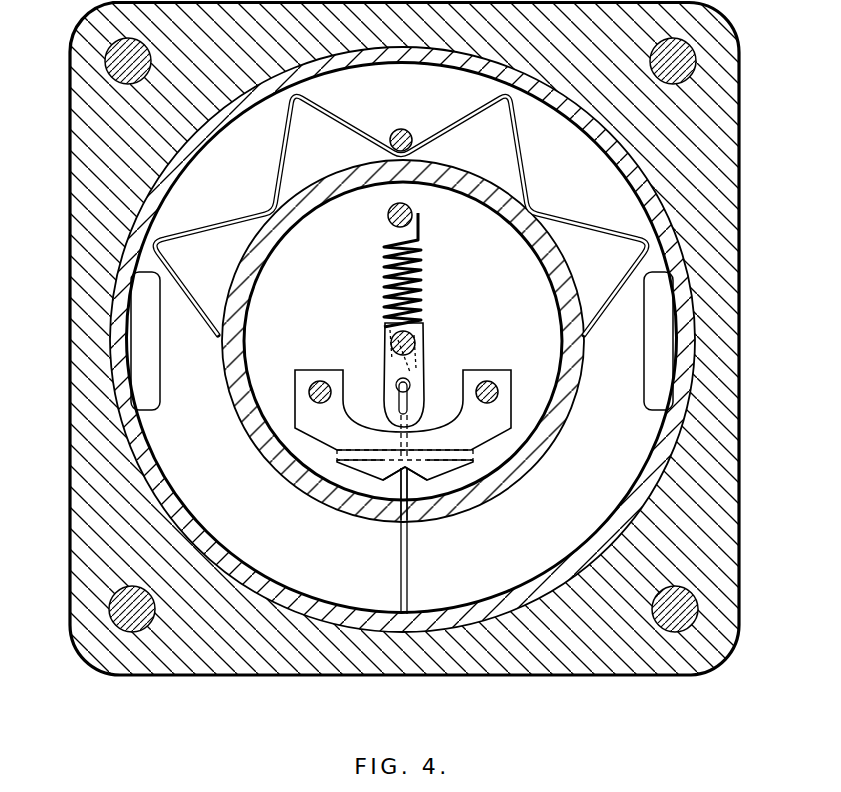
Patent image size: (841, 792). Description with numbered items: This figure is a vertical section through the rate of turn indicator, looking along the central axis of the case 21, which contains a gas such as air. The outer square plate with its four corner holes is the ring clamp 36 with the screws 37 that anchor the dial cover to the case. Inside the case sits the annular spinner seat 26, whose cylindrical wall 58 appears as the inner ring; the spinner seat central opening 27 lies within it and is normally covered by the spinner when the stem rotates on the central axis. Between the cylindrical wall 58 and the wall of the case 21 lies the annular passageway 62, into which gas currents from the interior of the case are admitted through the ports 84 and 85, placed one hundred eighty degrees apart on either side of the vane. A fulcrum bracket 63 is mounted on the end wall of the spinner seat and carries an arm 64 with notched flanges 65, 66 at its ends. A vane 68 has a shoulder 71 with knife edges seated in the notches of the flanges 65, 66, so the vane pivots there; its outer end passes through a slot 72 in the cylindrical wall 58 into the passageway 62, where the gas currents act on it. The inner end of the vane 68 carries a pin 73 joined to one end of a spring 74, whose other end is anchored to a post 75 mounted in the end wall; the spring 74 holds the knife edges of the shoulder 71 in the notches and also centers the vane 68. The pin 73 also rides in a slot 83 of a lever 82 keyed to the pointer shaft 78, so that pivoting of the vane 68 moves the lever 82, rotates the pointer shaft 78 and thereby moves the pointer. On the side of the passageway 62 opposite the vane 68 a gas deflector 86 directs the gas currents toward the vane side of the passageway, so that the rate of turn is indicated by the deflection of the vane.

The case 21 is at (180, 503).
The annular spinner seat 26 is at (626, 438).
The spinner seat central opening 27 is at (498, 304).
The ring clamp 36 is at (727, 379).
The screws 37 is at (110, 60).
The cylindrical wall 58 is at (518, 482).
The annular passageway 62 is at (580, 185).
The fulcrum bracket 63 is at (328, 378).
The arm 64 is at (446, 456).
The notched flange 65 is at (403, 470).
The notched flange 66 is at (437, 466).
The vane 68 is at (400, 585).
The shoulder 71 is at (389, 478).
The slot 72 is at (412, 514).
The pin 73 is at (411, 386).
The spring 74 is at (421, 273).
The post 75 is at (387, 219).
The pointer shaft 78 is at (409, 340).
The lever 82 is at (420, 372).
The slot 83 is at (397, 403).
The port 84 is at (648, 343).
The port 85 is at (131, 344).
The gas deflector 86 is at (523, 171).